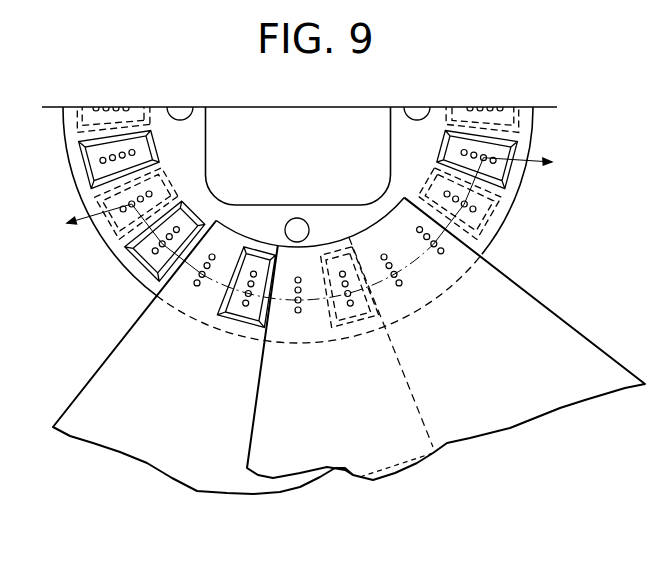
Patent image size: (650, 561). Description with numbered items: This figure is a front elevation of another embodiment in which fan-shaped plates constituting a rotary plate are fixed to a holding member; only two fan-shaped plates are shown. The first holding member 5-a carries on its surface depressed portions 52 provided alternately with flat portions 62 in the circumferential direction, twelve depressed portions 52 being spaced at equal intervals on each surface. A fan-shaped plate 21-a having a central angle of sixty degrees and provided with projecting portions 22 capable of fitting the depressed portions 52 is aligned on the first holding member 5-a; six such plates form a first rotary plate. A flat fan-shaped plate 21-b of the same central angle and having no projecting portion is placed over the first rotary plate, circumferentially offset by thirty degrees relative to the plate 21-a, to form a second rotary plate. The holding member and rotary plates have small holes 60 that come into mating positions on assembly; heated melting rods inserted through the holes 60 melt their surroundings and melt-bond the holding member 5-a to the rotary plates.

The first holding member 5-a is at (122, 265).
The depressed portion 52 is at (506, 143).
The flat portion 62 is at (492, 206).
The projecting portion 22 is at (216, 301).
The small hole 60 is at (494, 163).
The fan-shaped plate 21-a is at (157, 462).
The flat fan-shaped plate 21-b is at (354, 465).